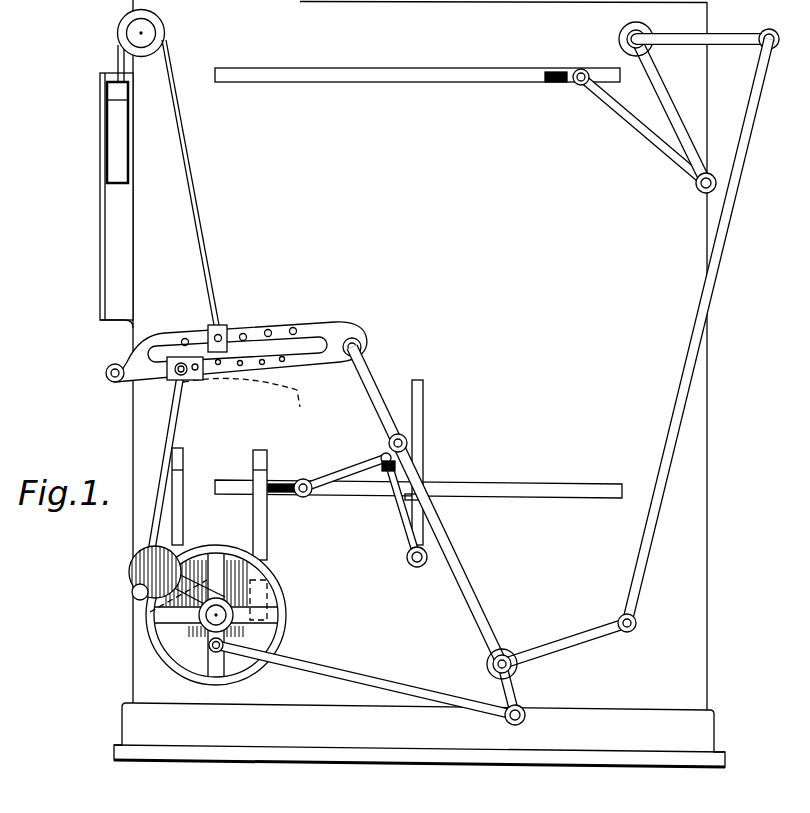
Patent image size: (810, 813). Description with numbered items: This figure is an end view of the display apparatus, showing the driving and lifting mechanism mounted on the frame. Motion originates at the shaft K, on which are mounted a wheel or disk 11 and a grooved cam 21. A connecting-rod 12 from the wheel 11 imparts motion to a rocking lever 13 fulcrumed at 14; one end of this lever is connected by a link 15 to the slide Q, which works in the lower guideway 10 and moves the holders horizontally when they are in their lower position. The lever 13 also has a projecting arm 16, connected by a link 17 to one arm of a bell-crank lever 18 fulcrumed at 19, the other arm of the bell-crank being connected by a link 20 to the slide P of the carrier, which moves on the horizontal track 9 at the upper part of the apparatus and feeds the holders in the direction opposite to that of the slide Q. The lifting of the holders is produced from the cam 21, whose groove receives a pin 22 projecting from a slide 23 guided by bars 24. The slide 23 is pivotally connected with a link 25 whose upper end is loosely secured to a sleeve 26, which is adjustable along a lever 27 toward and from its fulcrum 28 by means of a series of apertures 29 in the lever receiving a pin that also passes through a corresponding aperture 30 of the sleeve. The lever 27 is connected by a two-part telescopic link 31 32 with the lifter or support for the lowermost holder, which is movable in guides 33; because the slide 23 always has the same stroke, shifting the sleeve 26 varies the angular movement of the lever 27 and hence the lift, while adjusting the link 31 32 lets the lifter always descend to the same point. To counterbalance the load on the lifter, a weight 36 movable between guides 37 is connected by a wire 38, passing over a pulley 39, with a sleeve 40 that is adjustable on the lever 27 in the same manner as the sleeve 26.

The horizontal track 9 is at (322, 84).
The slide P is at (563, 88).
The guideway 10 is at (575, 490).
The wheel or disk 11 is at (228, 652).
The connecting-rod 12 is at (408, 694).
The rocking lever 13 is at (480, 608).
The fulcrum 14 is at (520, 673).
The link 15 is at (337, 474).
The projecting arm 16 is at (553, 648).
The link 17 is at (700, 331).
The bell-crank lever 18 is at (730, 36).
The fulcrum 19 is at (627, 38).
The link 20 is at (632, 122).
The cam 21 is at (150, 578).
The pin 22 is at (255, 617).
The slide 23 is at (255, 585).
The bars 24 is at (253, 452).
The link 25 is at (181, 382).
The sleeve 26 is at (261, 411).
The lever 27 is at (327, 364).
The fulcrum 28 is at (110, 365).
The apertures 29 is at (243, 412).
The aperture 30 is at (200, 358).
The link 31 is at (365, 378).
The link 32 is at (407, 520).
The guides 33 is at (425, 407).
The weight 36 is at (112, 165).
The guides 37 is at (104, 259).
The wire 38 is at (205, 210).
The pulley 39 is at (168, 34).
The sleeve 40 is at (227, 323).
The shaft K is at (216, 623).
The slide Q is at (285, 533).